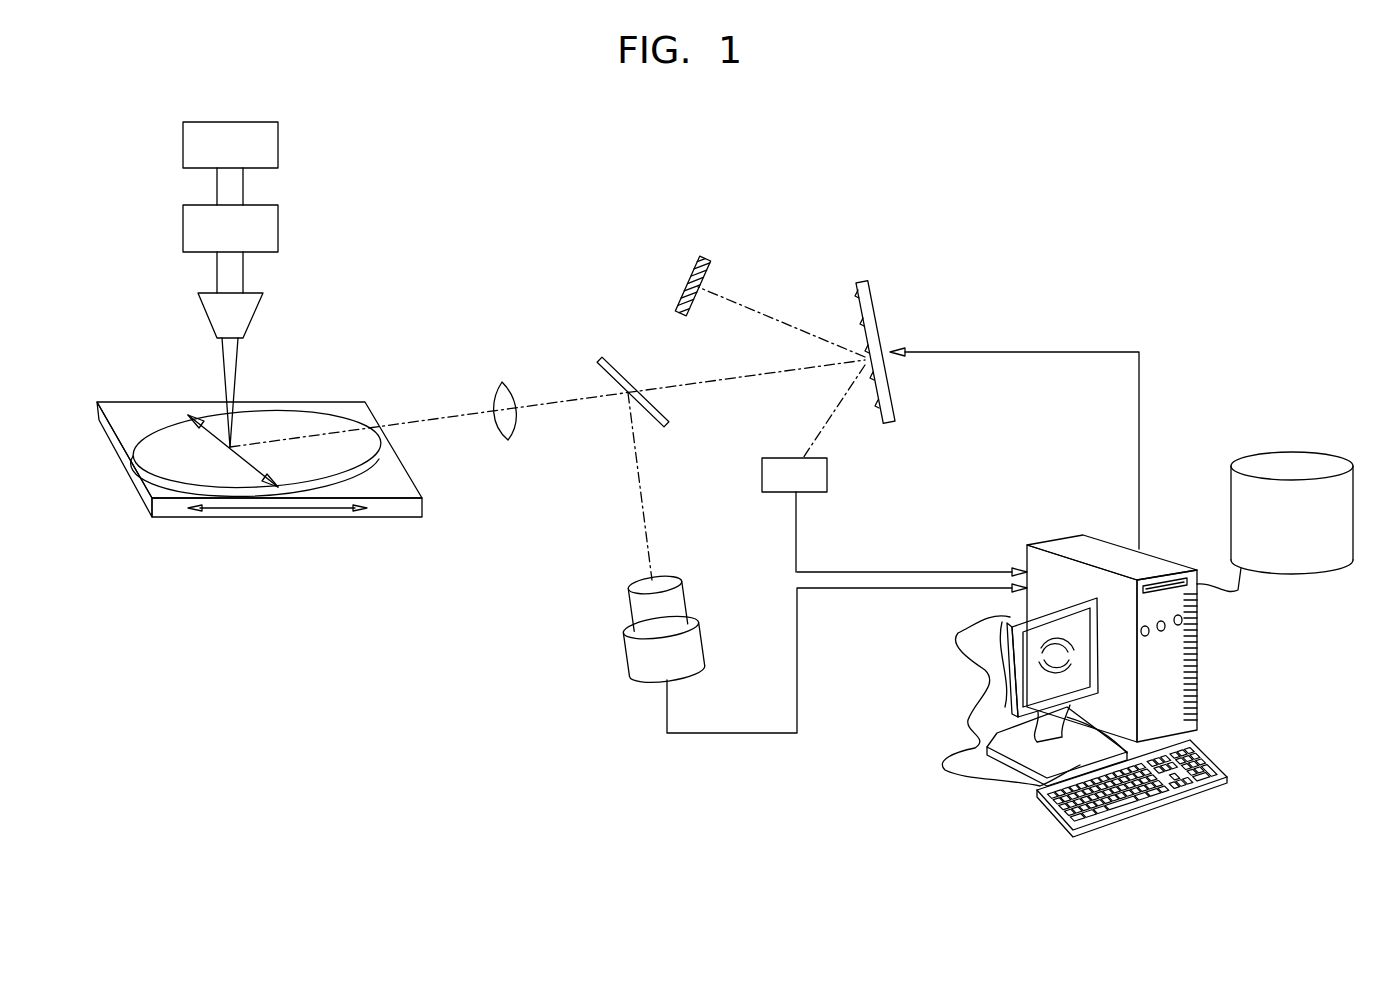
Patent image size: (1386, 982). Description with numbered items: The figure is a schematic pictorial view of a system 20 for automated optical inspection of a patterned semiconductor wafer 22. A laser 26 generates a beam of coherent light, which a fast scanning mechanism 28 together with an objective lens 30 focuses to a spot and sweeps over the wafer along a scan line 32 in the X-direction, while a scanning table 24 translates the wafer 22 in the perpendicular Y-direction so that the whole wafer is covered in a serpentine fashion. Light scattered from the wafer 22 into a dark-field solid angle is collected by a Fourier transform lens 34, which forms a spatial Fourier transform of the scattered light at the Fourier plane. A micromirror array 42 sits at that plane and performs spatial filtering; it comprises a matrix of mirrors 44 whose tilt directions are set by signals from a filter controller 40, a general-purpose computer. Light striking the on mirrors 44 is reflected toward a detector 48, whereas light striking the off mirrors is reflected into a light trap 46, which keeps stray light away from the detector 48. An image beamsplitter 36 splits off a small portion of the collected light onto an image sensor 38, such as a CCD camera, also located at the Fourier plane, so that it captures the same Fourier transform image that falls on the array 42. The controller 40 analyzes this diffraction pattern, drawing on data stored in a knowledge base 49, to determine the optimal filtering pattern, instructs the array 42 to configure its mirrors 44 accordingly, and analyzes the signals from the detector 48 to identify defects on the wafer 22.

The system 20 is at (1052, 195).
The patterned semiconductor wafer 22 is at (275, 422).
The scanning table 24 is at (282, 518).
The laser 26 is at (278, 143).
The fast scanning mechanism 28 is at (278, 228).
The objective lens 30 is at (253, 322).
The scan line 32 is at (137, 453).
The Fourier transform lens 34 is at (510, 437).
The image beamsplitter 36 is at (617, 370).
The image sensor 38 is at (630, 663).
The filter controller 40 is at (1197, 672).
The micromirror array 42 is at (873, 292).
The mirrors 44 is at (873, 383).
The light trap 46 is at (695, 262).
The detector 48 is at (762, 478).
The knowledge base 49 is at (1315, 452).